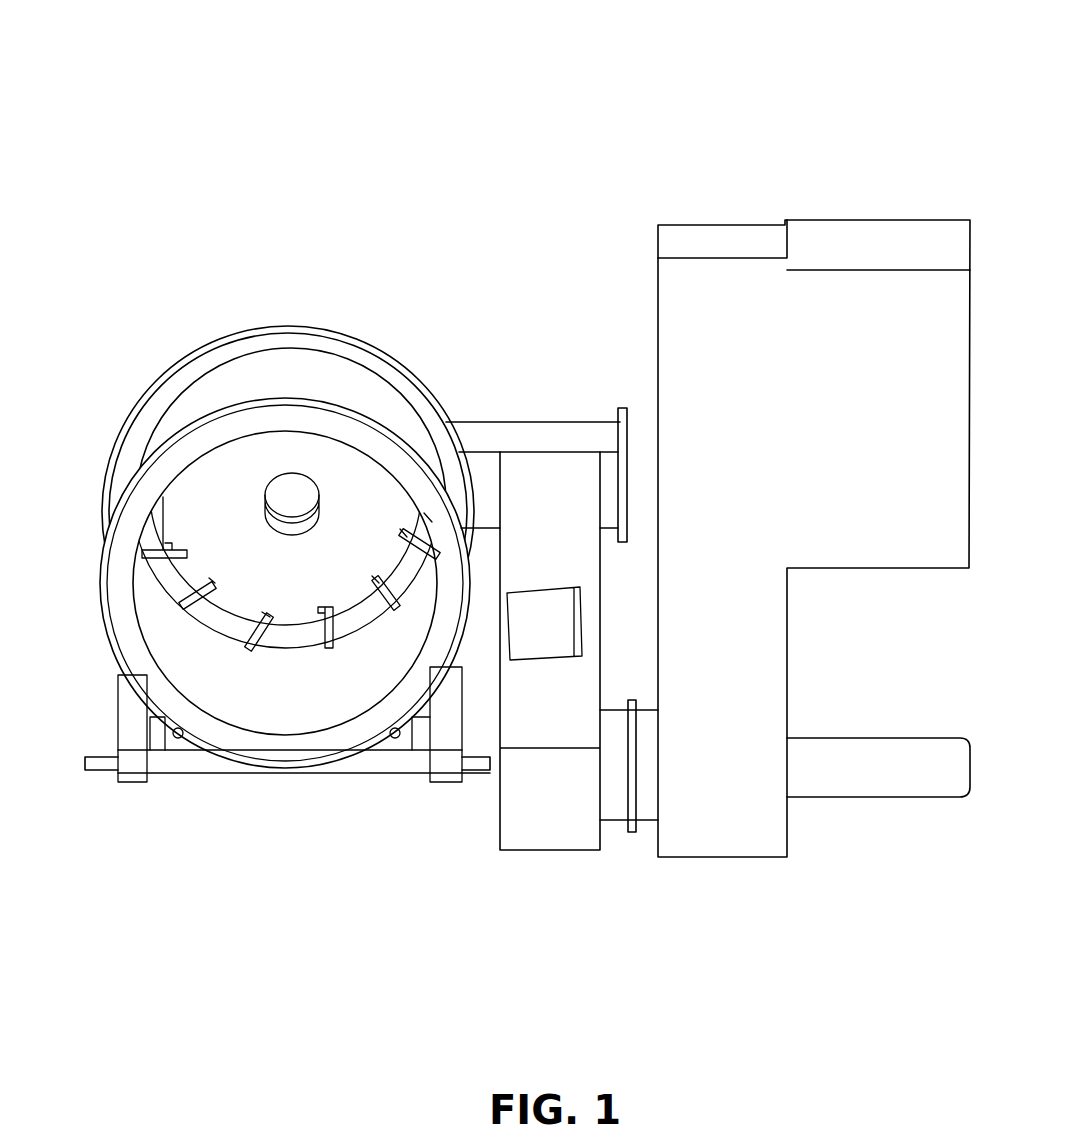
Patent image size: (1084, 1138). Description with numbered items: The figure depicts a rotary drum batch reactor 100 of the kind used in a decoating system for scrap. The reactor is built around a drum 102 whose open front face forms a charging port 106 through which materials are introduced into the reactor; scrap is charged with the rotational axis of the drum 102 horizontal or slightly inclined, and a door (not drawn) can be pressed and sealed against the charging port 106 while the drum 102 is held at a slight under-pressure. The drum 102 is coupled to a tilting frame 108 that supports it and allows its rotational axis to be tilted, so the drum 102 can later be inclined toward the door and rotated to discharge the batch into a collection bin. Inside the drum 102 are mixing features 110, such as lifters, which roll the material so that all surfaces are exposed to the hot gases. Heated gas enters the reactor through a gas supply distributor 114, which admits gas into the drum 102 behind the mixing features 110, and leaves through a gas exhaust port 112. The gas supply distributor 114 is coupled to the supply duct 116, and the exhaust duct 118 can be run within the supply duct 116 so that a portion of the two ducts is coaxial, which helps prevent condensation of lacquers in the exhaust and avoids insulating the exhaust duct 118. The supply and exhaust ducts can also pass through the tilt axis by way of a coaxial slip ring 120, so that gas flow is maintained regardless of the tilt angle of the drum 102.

The rotary drum batch reactor 100 is at (245, 82).
The drum 102 is at (373, 390).
The charging port 106 is at (160, 673).
The tilting frame 108 is at (105, 763).
The mixing features 110 is at (242, 636).
The gas exhaust port 112 is at (284, 478).
The gas supply distributor 114 is at (269, 667).
The supply duct 116 is at (538, 438).
The exhaust duct 118 is at (537, 640).
The coaxial slip ring 120 is at (632, 833).